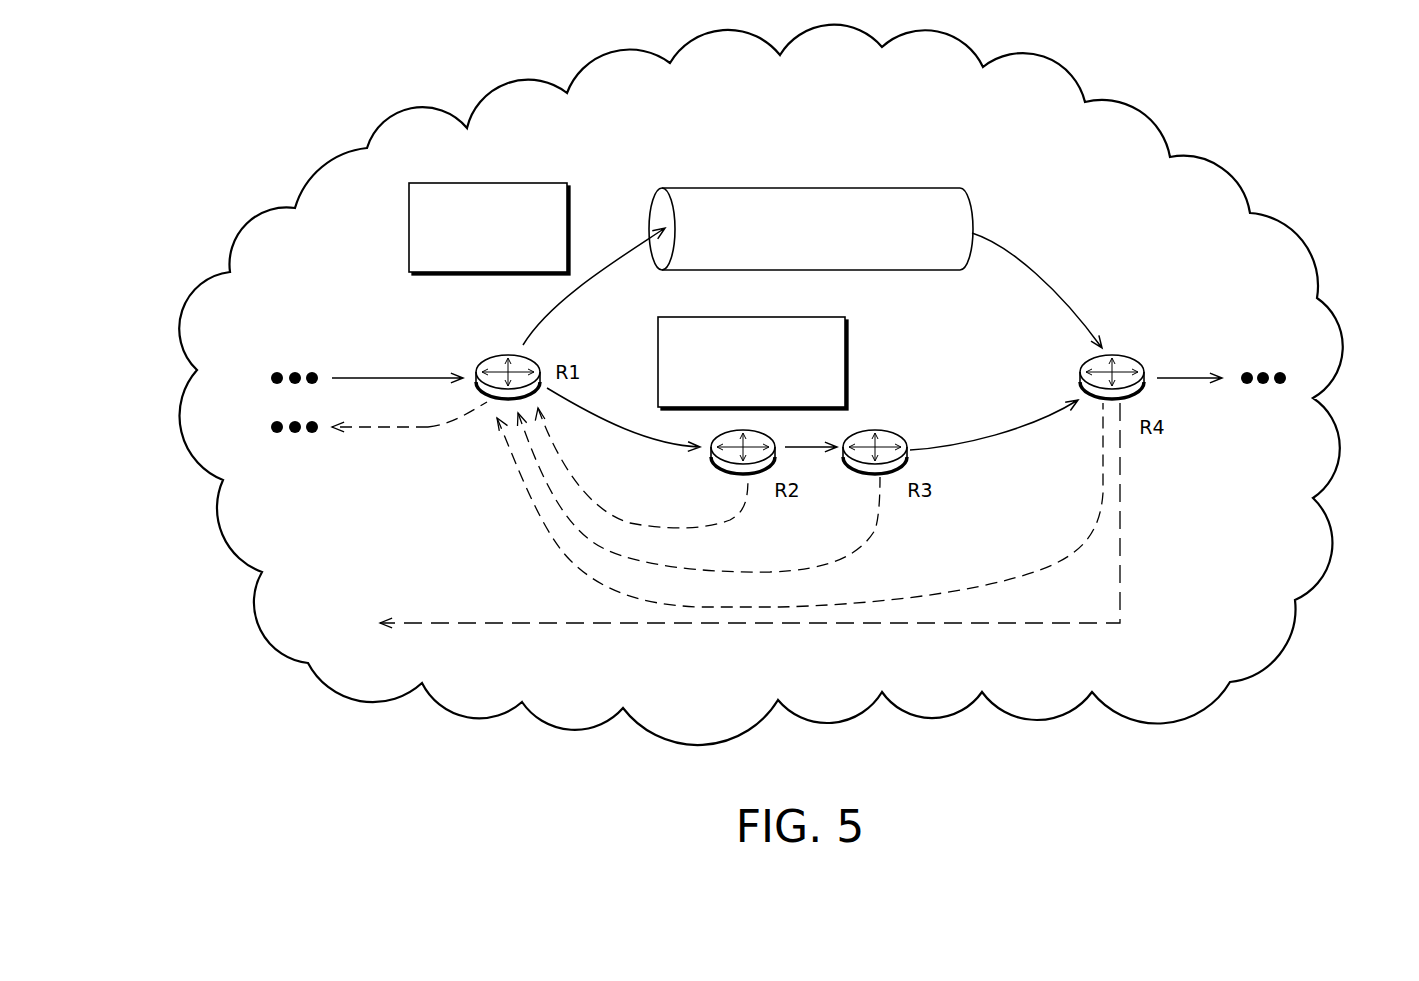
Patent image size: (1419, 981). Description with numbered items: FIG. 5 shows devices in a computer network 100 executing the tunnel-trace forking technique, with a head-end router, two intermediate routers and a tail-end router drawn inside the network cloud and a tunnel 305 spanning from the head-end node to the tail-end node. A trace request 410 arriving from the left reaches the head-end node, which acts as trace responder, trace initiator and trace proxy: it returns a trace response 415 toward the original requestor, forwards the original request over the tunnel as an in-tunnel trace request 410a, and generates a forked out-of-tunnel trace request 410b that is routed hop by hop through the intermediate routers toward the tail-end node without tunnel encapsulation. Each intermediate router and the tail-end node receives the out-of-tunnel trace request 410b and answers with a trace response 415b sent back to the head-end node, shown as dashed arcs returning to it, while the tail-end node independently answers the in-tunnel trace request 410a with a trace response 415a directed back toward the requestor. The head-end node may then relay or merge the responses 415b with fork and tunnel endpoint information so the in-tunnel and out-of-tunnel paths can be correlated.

The computer network 100 is at (800, 157).
The tunnel 305 is at (800, 252).
The trace request message 410 is at (425, 359).
The in-tunnel trace request 410a is at (611, 241).
The out-of-tunnel trace request 410b is at (609, 399).
The trace response message 415 is at (416, 444).
The trace response to in-tunnel trace request 415a is at (1137, 590).
The trace response to out-of-tunnel trace request 415b is at (740, 492).